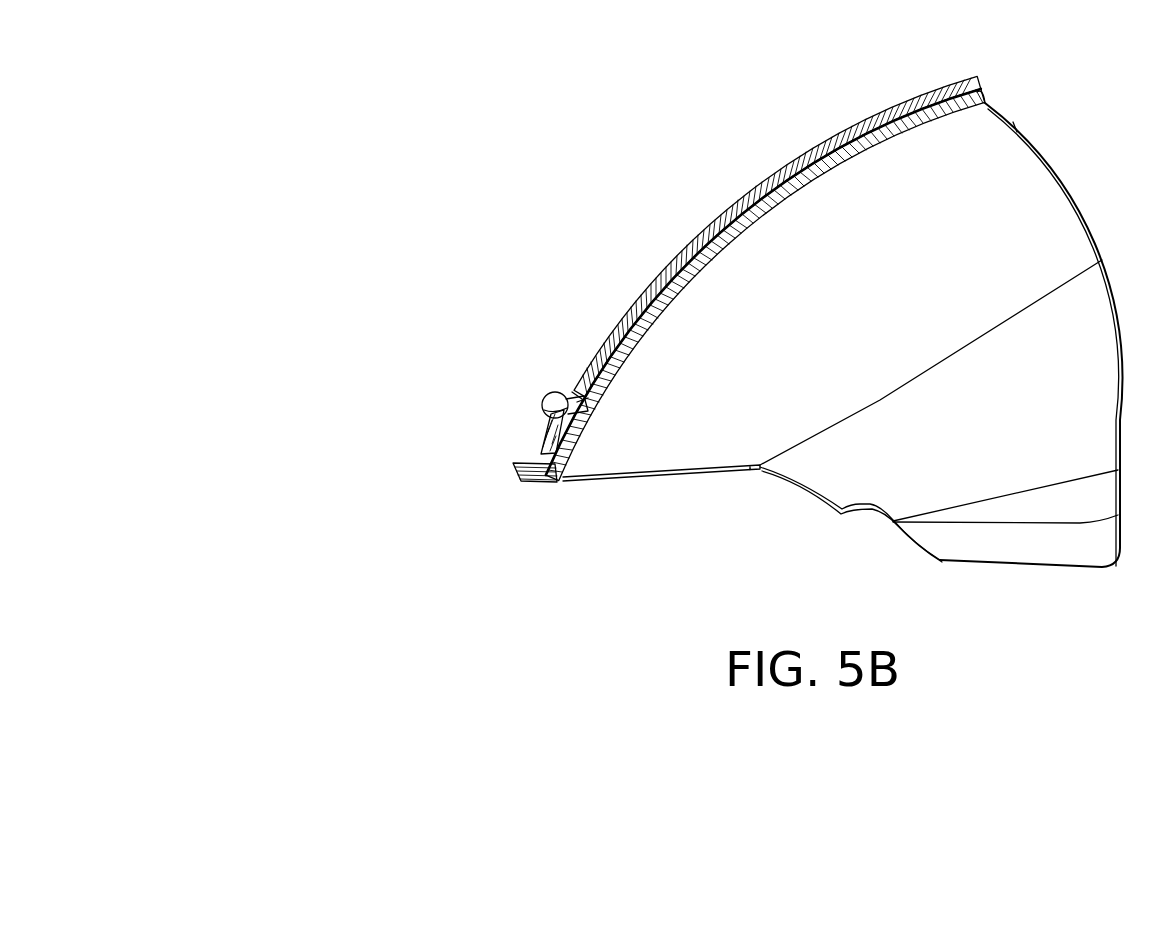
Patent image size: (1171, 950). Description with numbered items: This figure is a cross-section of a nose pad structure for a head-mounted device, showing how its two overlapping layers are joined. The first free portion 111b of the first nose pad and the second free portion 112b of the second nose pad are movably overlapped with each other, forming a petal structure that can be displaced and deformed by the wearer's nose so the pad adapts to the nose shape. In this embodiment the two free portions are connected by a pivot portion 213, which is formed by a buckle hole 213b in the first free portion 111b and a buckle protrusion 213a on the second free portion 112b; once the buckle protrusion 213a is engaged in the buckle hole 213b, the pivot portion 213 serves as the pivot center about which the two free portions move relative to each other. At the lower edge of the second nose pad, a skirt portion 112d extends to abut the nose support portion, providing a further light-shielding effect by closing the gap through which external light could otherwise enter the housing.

The first free portion 111b is at (738, 202).
The second free portion 112b is at (730, 237).
The skirt portion 112d is at (531, 473).
The pivot portion 213 is at (401, 217).
The buckle protrusion 213a is at (548, 398).
The buckle hole 213b is at (578, 398).